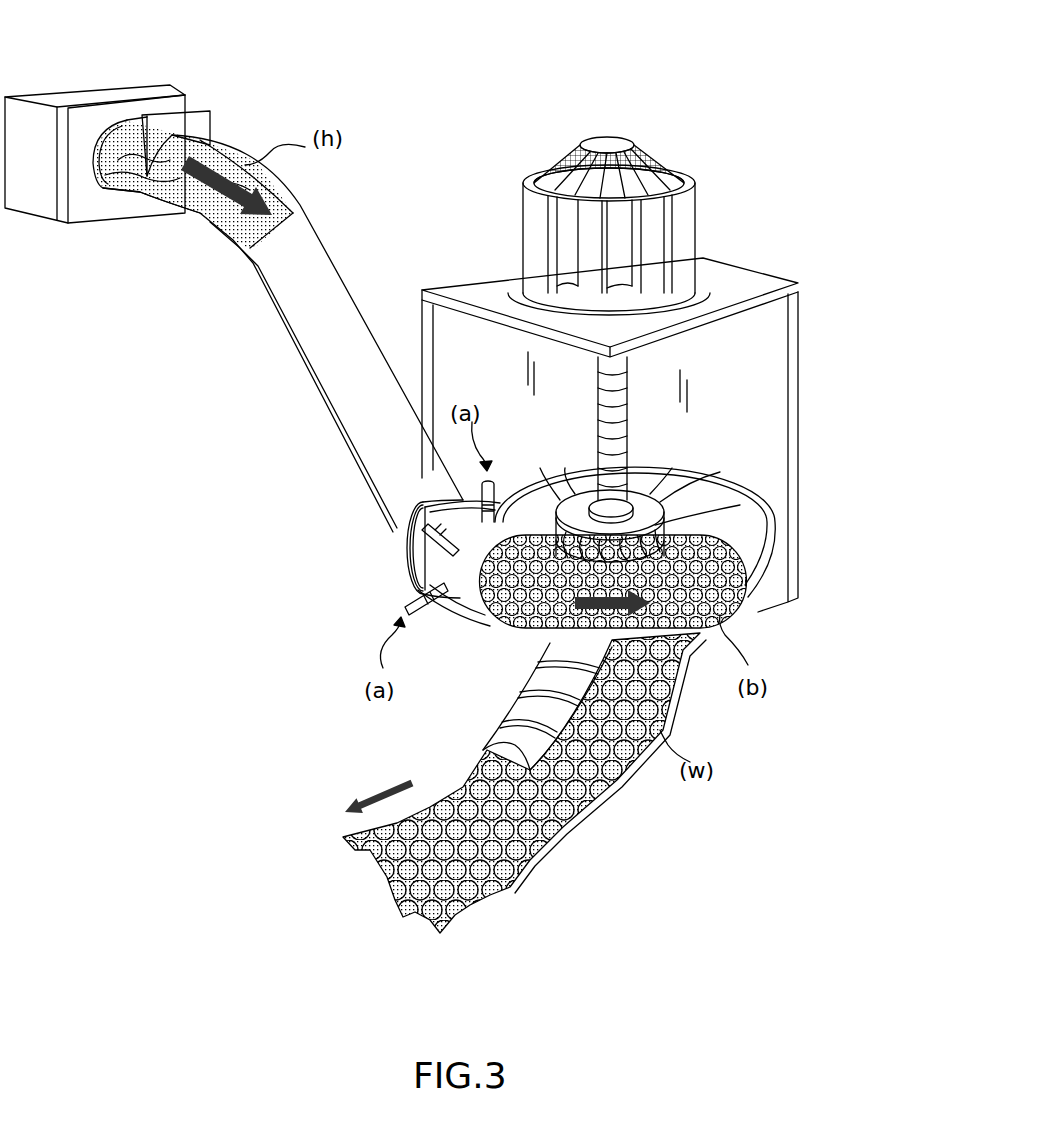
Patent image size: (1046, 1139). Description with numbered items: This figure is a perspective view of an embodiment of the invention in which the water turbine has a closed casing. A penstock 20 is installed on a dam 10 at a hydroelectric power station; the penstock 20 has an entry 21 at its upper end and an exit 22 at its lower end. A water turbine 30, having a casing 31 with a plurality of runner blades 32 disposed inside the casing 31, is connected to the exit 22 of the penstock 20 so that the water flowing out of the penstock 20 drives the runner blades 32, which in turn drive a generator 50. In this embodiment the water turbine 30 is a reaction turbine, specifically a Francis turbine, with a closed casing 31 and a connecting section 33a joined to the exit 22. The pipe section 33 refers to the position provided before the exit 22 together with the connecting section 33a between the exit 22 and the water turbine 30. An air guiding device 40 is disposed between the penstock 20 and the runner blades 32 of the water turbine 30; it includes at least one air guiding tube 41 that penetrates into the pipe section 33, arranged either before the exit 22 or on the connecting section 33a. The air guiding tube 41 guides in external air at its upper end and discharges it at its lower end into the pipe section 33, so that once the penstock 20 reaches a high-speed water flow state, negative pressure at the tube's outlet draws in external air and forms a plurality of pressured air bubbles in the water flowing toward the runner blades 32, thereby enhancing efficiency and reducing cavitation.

The dam 10 is at (57, 88).
The entry 21 is at (193, 134).
The penstock 20 is at (350, 308).
The exit 22 is at (400, 530).
The water turbine 30 is at (692, 462).
The casing 31 is at (752, 545).
The runner blades 32 is at (652, 512).
The pipe section 33 is at (318, 538).
The connecting section 33a is at (420, 570).
The air guiding device 40 is at (510, 447).
The air guiding tube 41 is at (522, 495).
The generator 50 is at (688, 238).